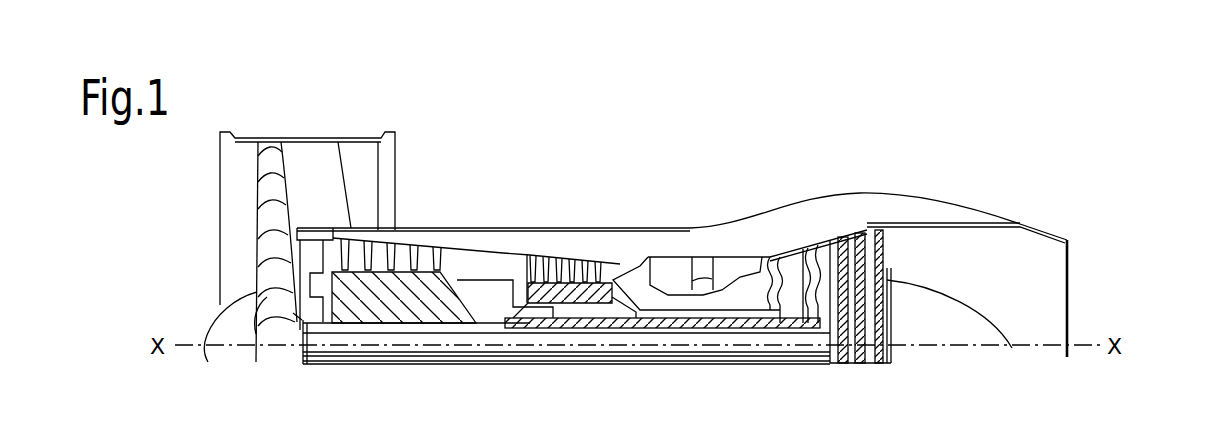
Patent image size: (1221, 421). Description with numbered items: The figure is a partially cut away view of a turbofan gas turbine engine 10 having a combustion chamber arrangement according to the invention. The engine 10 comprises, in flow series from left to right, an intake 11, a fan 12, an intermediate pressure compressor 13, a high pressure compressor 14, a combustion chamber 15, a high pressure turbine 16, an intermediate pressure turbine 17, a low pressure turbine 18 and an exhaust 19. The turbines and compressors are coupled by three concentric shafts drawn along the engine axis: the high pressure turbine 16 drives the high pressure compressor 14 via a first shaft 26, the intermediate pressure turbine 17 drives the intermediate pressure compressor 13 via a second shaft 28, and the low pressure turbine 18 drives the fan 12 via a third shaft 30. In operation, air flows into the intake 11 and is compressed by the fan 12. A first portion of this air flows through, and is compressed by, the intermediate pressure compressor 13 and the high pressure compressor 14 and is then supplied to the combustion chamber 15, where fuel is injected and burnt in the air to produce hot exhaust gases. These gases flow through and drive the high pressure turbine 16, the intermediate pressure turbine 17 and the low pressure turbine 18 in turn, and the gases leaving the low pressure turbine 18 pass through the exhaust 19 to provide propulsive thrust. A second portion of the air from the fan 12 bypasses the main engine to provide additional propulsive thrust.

The turbofan gas turbine engine 10 is at (563, 157).
The intake 11 is at (196, 231).
The fan 12 is at (280, 170).
The intermediate pressure compressor 13 is at (403, 283).
The high pressure compressor 14 is at (570, 263).
The combustion chamber 15 is at (703, 250).
The high pressure turbine 16 is at (763, 257).
The intermediate pressure turbine 17 is at (807, 253).
The low pressure turbine 18 is at (887, 253).
The exhaust 19 is at (1047, 310).
The first shaft 26 is at (736, 312).
The second shaft 28 is at (518, 320).
The third shaft 30 is at (400, 358).